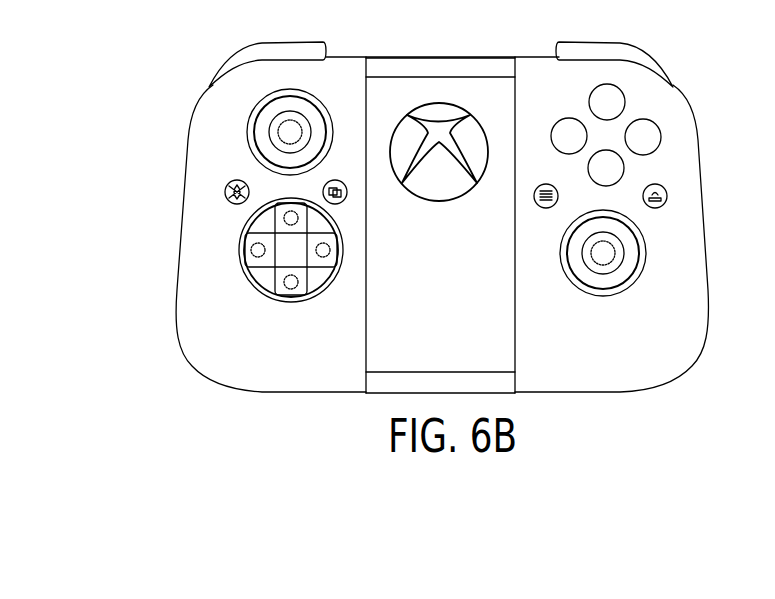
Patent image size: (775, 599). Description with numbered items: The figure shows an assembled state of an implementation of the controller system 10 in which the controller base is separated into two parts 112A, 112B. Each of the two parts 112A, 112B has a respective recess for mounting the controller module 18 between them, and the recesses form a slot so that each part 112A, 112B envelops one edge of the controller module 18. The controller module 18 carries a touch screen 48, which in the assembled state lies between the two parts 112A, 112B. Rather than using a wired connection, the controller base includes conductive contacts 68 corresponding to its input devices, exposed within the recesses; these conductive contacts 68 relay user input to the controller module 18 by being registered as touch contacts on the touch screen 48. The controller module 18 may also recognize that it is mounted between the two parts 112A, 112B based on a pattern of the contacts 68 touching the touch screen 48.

The controller system 10 is at (166, 53).
The controller module 18 is at (428, 58).
The touch screen 48 is at (397, 104).
The conductive contact 68 is at (297, 122).
The first part of controller base 112A is at (180, 210).
The second part of controller base 112B is at (702, 217).